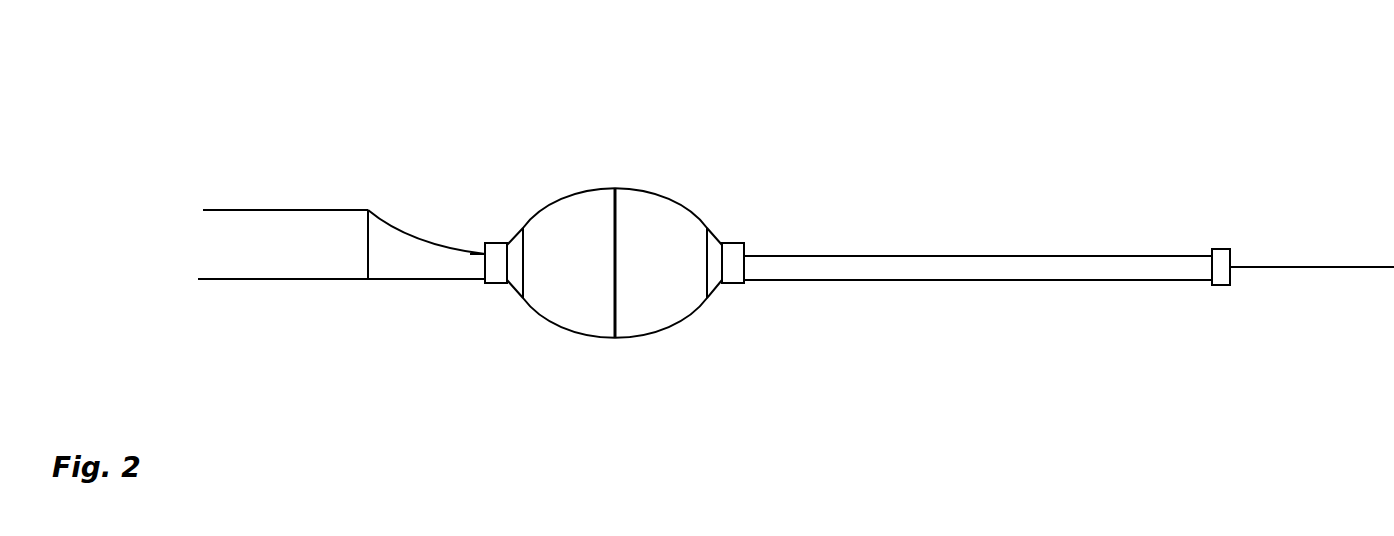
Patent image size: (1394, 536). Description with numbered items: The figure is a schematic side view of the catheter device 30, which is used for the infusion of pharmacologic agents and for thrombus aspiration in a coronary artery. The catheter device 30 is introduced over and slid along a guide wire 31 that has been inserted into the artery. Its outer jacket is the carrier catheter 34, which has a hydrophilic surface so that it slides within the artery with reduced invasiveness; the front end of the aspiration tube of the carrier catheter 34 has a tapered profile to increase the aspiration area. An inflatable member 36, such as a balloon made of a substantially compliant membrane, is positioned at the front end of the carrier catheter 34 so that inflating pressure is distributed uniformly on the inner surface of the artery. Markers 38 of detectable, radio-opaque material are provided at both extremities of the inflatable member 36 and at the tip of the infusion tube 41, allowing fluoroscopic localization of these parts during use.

The catheter device 30 is at (467, 102).
The guide wire 31 is at (1290, 268).
The carrier catheter 34 is at (417, 215).
The inflatable member 36 is at (633, 188).
The markers 38 is at (493, 285).
The infusion tube 41 is at (957, 256).